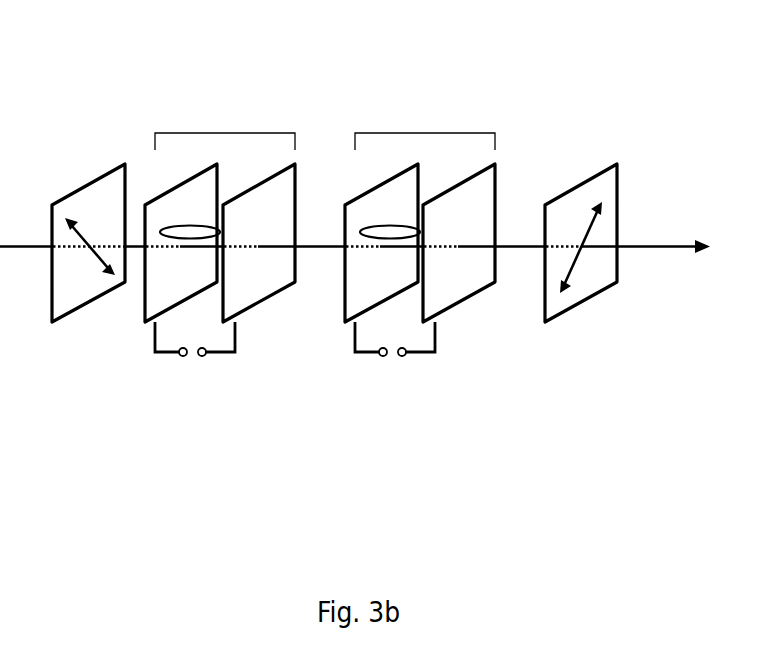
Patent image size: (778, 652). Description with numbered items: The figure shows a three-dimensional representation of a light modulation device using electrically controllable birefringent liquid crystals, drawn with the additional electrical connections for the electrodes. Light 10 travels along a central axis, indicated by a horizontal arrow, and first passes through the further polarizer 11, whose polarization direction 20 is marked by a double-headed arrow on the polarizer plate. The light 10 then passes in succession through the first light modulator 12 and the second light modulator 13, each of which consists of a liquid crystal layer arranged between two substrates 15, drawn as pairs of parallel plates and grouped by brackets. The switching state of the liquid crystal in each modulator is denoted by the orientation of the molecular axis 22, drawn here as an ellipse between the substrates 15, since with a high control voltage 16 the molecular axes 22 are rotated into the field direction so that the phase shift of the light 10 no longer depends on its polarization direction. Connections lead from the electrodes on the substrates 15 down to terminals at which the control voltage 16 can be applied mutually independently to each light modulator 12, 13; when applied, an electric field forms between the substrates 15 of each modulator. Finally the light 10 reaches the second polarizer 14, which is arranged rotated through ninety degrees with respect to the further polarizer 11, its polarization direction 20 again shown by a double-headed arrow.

The light 10 is at (658, 246).
The further polarizer 11 is at (52, 205).
The first light modulator 12 is at (225, 133).
The second light modulator 13 is at (425, 133).
The polarizer 14 is at (545, 203).
The substrate 15 is at (147, 205).
The control voltage 16 is at (192, 358).
The polarization direction 20 is at (79, 228).
The molecular axis 22 is at (190, 226).